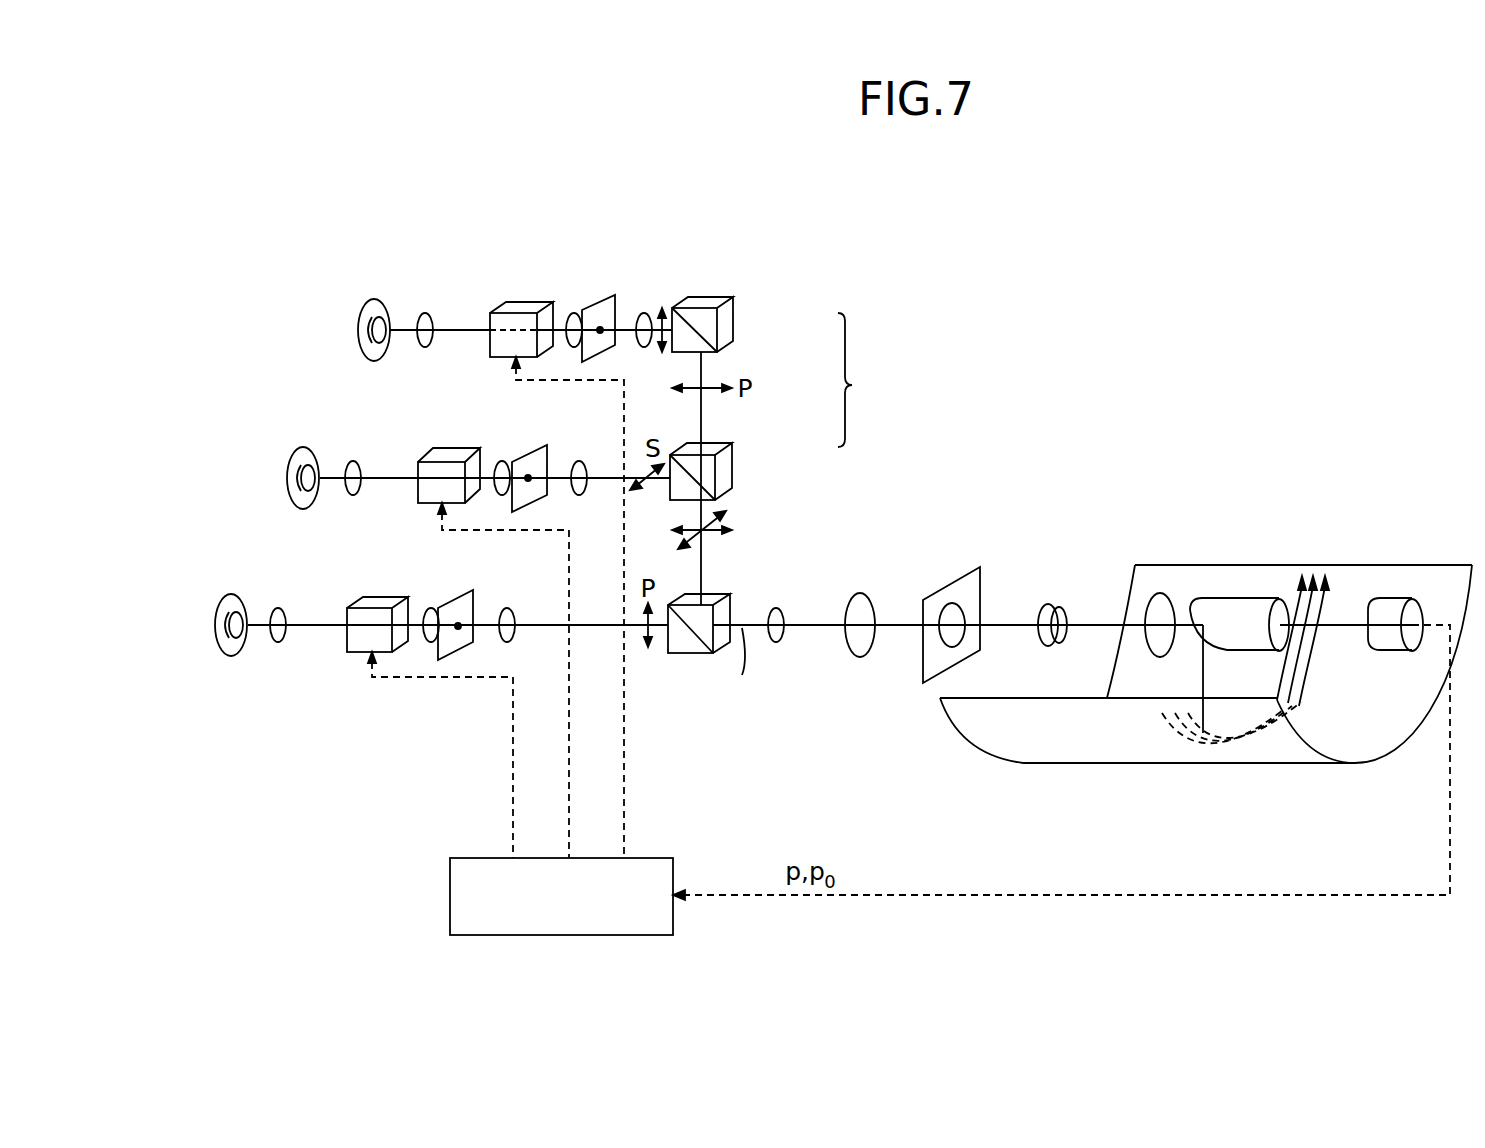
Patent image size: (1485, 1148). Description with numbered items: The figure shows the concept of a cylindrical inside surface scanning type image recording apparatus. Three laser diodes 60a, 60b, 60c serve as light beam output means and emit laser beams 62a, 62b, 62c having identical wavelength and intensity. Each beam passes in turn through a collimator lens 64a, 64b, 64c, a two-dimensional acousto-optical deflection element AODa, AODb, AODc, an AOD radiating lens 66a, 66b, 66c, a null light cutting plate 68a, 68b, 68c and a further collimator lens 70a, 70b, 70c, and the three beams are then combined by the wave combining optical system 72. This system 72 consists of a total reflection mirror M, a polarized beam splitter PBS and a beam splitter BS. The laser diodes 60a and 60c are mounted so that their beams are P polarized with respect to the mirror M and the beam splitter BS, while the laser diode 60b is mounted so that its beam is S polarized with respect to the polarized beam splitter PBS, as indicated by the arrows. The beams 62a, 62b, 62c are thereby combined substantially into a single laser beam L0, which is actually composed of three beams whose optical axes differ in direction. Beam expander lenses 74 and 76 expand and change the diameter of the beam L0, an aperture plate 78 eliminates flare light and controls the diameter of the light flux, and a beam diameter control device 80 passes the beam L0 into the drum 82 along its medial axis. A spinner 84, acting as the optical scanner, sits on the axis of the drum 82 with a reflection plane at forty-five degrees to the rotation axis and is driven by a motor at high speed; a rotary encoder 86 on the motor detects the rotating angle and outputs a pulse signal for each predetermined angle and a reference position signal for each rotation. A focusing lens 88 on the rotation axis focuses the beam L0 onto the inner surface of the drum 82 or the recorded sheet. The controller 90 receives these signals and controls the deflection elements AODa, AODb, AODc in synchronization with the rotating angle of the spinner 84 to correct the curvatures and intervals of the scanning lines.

The laser diode 60a is at (226, 655).
The laser diode 60b is at (302, 450).
The laser diode 60c is at (375, 302).
The laser beam 62a is at (258, 630).
The laser beam 62b is at (328, 470).
The laser beam 62c is at (397, 322).
The collimator lens 64a is at (280, 643).
The collimator lens 64b is at (356, 461).
The collimator lens 64c is at (428, 312).
The AOD radiating lens 66a is at (432, 608).
The AOD radiating lens 66b is at (502, 461).
The AOD radiating lens 66c is at (577, 312).
The null light cutting plate 68a is at (470, 592).
The null light cutting plate 68b is at (545, 447).
The null light cutting plate 68c is at (615, 300).
The collimator lens 70a is at (509, 608).
The collimator lens 70b is at (580, 461).
The collimator lens 70c is at (652, 312).
The wave combining optical system 72 is at (861, 380).
The beam expander lens 74 is at (778, 608).
The beam expander lens 76 is at (862, 593).
The aperture plate 78 is at (970, 570).
The beam diameter control device 80 is at (1047, 605).
The drum 82 is at (975, 748).
The spinner 84 is at (1265, 598).
The rotary encoder 86 is at (1405, 598).
The focusing lens 88 is at (1160, 593).
The controller 90 is at (450, 866).
The two-dimensional acousto-optical deflection element AODa is at (360, 655).
The two-dimensional acousto-optical deflection element AODb is at (437, 448).
The two-dimensional acousto-optical deflection element AODc is at (510, 302).
The total reflection mirror M is at (733, 315).
The polarized beam splitter PBS is at (733, 452).
The beam splitter BS is at (730, 594).
The laser beam L0 is at (752, 663).